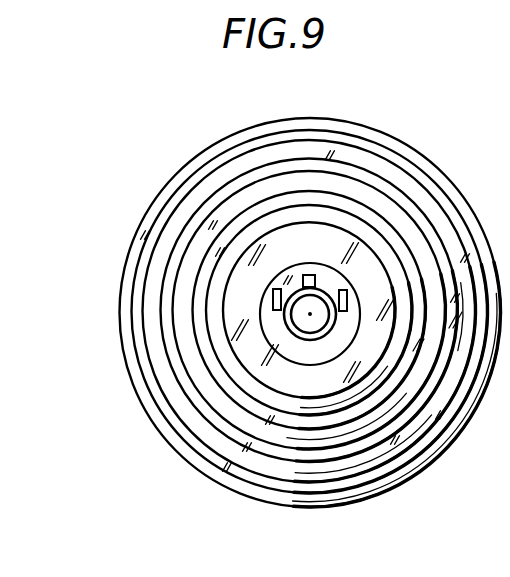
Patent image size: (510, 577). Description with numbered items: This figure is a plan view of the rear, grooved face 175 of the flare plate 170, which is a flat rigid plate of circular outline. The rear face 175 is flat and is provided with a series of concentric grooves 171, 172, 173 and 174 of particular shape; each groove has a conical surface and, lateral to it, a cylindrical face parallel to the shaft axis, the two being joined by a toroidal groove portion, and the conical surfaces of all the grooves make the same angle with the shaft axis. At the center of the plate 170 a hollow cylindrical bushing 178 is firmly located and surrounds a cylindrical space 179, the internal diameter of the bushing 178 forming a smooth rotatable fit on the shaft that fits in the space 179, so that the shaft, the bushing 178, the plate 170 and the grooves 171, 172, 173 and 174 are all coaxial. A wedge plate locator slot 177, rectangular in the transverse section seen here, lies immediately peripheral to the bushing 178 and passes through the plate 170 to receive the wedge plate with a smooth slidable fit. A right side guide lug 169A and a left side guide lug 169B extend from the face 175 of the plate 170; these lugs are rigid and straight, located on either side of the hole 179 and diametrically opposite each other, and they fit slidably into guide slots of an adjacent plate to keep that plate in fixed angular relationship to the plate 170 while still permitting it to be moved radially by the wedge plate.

The flare plate 170 is at (116, 293).
The concentric groove 171 is at (285, 410).
The concentric groove 172 is at (302, 448).
The concentric groove 173 is at (340, 470).
The concentric groove 174 is at (407, 470).
The rear grooved face 175 is at (253, 412).
The wedge plate locator slot 177 is at (311, 275).
The hollow cylindrical bushing 178 is at (330, 323).
The cylindrical space 179 is at (300, 318).
The right side guide lug 169A is at (347, 299).
The left side guide lug 169B is at (273, 303).